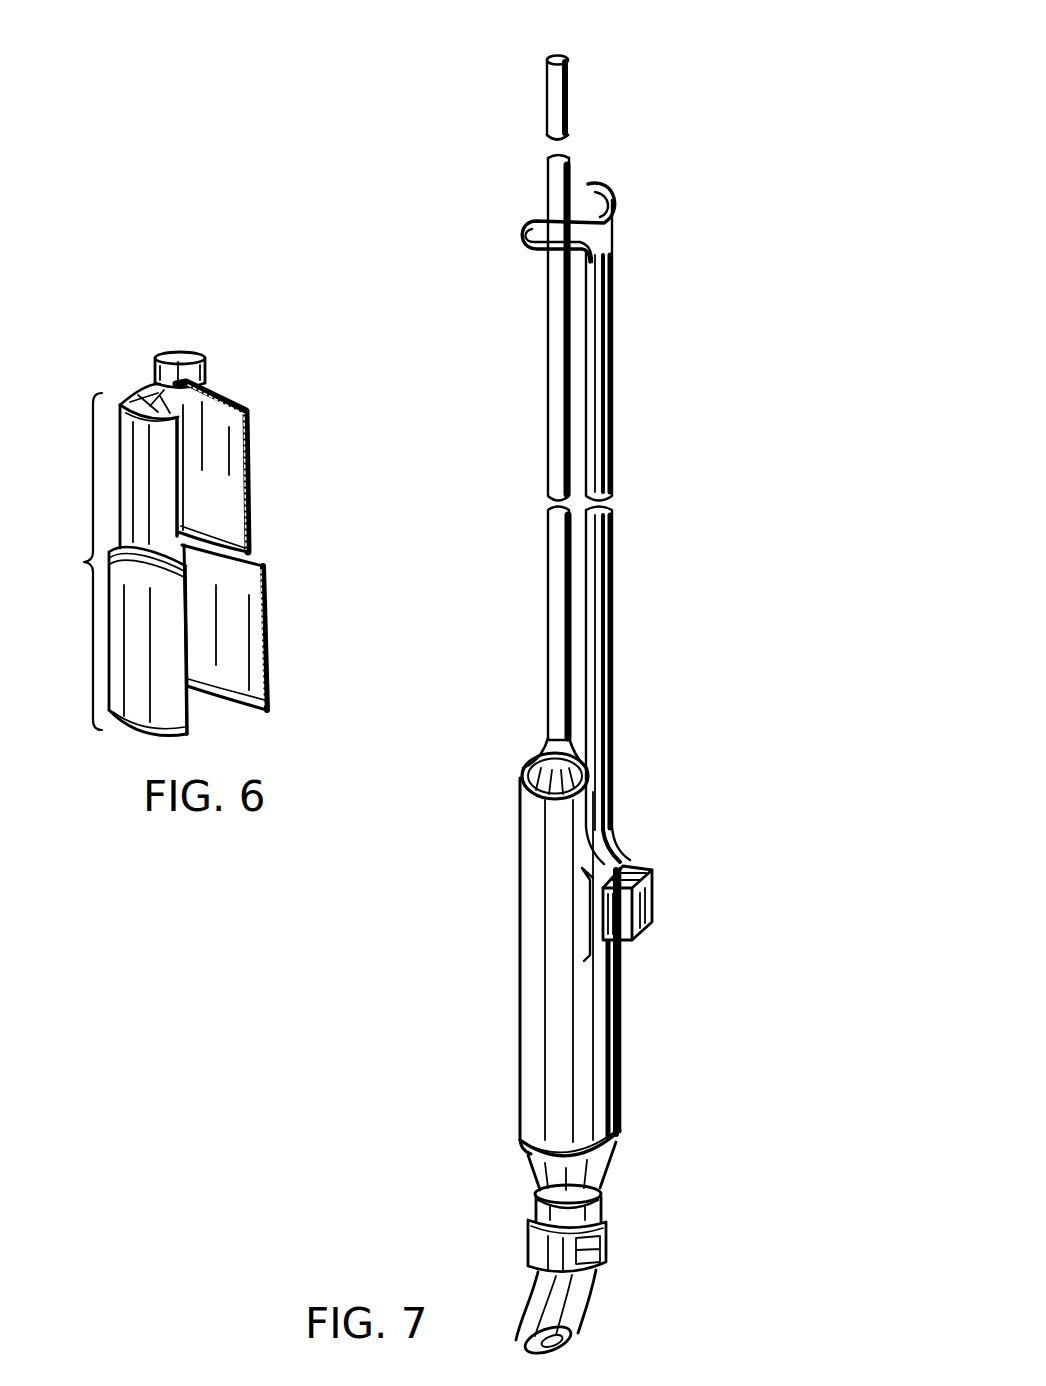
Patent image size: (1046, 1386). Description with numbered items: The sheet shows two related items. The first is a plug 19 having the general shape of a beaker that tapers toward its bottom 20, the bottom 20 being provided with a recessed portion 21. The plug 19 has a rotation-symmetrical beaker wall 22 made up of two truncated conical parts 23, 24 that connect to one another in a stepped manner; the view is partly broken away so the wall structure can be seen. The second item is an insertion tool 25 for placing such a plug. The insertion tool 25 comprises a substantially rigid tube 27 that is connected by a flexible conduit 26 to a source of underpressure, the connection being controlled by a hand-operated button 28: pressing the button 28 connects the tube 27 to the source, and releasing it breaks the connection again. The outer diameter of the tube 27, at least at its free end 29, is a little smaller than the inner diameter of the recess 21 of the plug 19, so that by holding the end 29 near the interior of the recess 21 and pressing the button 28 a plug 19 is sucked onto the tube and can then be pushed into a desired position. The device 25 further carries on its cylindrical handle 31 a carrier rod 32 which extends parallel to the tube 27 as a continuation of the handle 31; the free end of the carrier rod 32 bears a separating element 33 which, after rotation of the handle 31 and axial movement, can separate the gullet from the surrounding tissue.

In FIG. 6, the plug 19 is at (266, 535).
In FIG. 6, the bottom 20 is at (147, 392).
In FIG. 6, the recessed portion 21 is at (180, 352).
In FIG. 6, the beaker wall 22 is at (69, 561).
In FIG. 6, the truncated conical part 23 is at (249, 454).
In FIG. 6, the truncated conical part 24 is at (268, 664).
In FIG. 7, the insertion tool 25 is at (627, 778).
In FIG. 7, the conduit 26 is at (549, 1306).
In FIG. 7, the tube 27 is at (557, 455).
In FIG. 7, the hand-operated button 28 is at (642, 891).
In FIG. 7, the free end 29 is at (623, 80).
In FIG. 7, the handle 31 is at (557, 997).
In FIG. 7, the carrier rod 32 is at (595, 576).
In FIG. 7, the separating element 33 is at (540, 237).